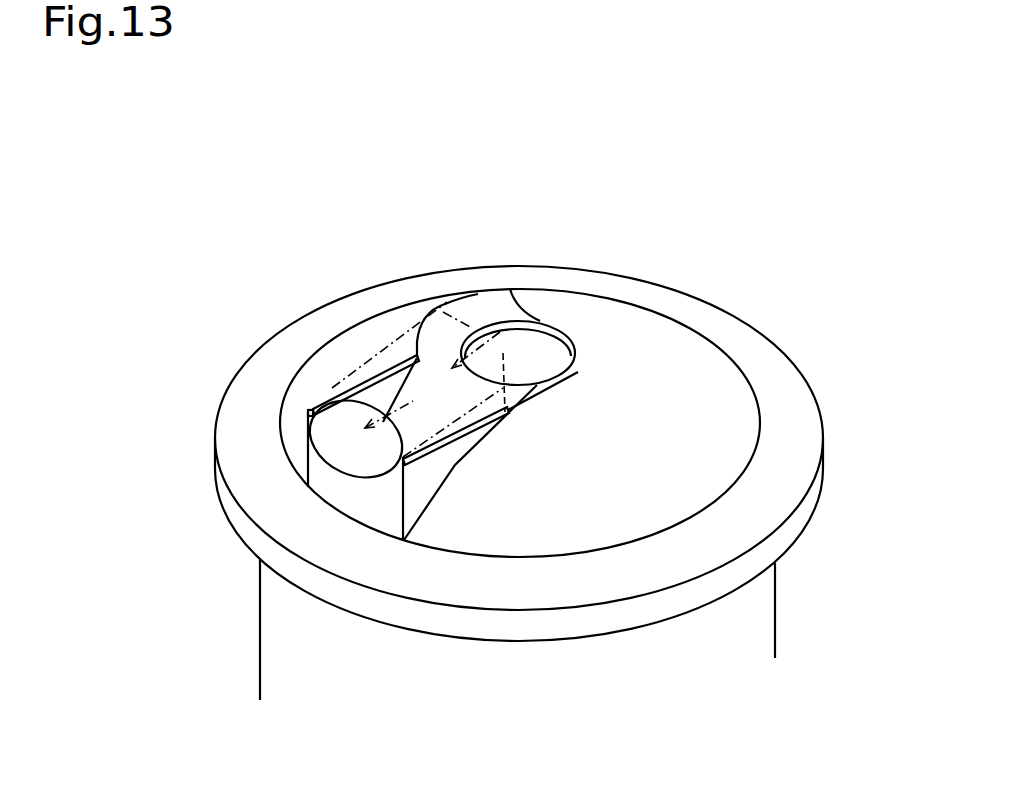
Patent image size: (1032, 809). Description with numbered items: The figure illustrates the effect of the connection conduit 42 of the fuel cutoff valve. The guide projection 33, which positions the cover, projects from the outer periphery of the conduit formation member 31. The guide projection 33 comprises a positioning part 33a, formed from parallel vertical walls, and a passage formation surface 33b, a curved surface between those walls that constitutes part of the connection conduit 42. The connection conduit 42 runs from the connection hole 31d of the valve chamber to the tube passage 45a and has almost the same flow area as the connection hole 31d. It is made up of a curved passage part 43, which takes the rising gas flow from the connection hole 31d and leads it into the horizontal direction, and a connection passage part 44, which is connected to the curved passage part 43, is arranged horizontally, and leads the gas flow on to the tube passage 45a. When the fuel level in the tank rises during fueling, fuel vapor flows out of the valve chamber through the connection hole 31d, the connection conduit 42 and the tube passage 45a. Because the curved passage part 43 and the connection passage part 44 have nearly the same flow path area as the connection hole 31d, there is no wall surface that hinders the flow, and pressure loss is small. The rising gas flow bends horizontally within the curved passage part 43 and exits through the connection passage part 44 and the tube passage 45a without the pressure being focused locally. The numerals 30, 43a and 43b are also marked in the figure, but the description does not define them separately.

The rotor assembly 30 is at (571, 483).
The conduit formation member 31 is at (698, 375).
The connection hole 31d is at (553, 355).
The guide projection 33 is at (437, 529).
The positioning part 33a is at (420, 475).
The passage formation surface 33b is at (363, 462).
The connection conduit 42 is at (428, 285).
The curved passage part 43 is at (466, 287).
The pin head large portion 43a is at (517, 367).
The pin head small portion 43b is at (478, 310).
The connection passage part 44 is at (415, 350).
The tube passage 45a is at (338, 438).